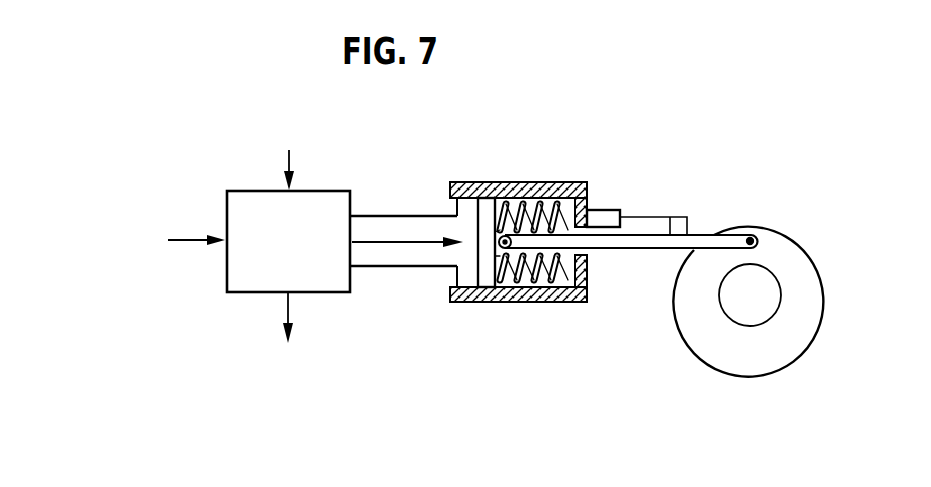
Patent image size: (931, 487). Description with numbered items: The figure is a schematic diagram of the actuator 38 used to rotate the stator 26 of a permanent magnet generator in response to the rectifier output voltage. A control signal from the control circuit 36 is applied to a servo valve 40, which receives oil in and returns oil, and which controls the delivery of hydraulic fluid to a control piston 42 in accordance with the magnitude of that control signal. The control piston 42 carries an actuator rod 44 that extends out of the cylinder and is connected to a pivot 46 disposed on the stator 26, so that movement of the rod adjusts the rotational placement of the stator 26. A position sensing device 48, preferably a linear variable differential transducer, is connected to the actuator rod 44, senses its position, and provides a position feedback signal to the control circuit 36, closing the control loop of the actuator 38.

The stator 26 is at (727, 358).
The control circuit 36 is at (157, 257).
The actuator 38 is at (178, 347).
The servo valve 40 is at (337, 197).
The control piston 42 is at (475, 185).
The actuator rod 44 is at (625, 243).
The pivot 46 is at (753, 238).
The position sensing device 48 is at (607, 218).